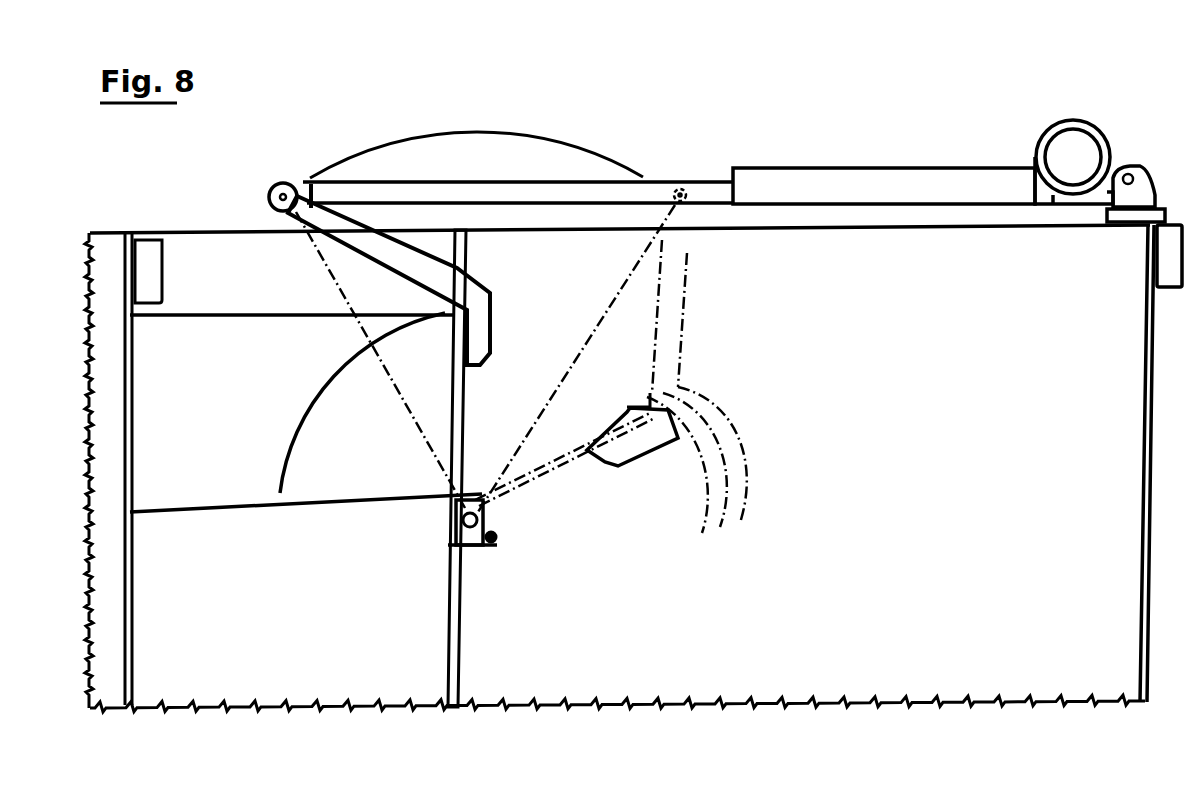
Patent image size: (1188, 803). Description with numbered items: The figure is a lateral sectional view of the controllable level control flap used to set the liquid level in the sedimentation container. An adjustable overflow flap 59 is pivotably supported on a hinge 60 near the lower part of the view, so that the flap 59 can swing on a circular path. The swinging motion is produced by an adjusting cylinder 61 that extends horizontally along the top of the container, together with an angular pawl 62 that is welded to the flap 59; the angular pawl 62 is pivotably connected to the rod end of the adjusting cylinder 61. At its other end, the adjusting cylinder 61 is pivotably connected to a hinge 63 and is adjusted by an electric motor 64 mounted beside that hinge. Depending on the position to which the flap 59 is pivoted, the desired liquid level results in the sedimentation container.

The adjustable overflow flap 59 is at (587, 450).
The hinge 60 is at (480, 540).
The adjusting cylinder 61 is at (886, 185).
The angular pawl 62 is at (367, 242).
The hinge 63 is at (1128, 170).
The electric motor 64 is at (1070, 152).